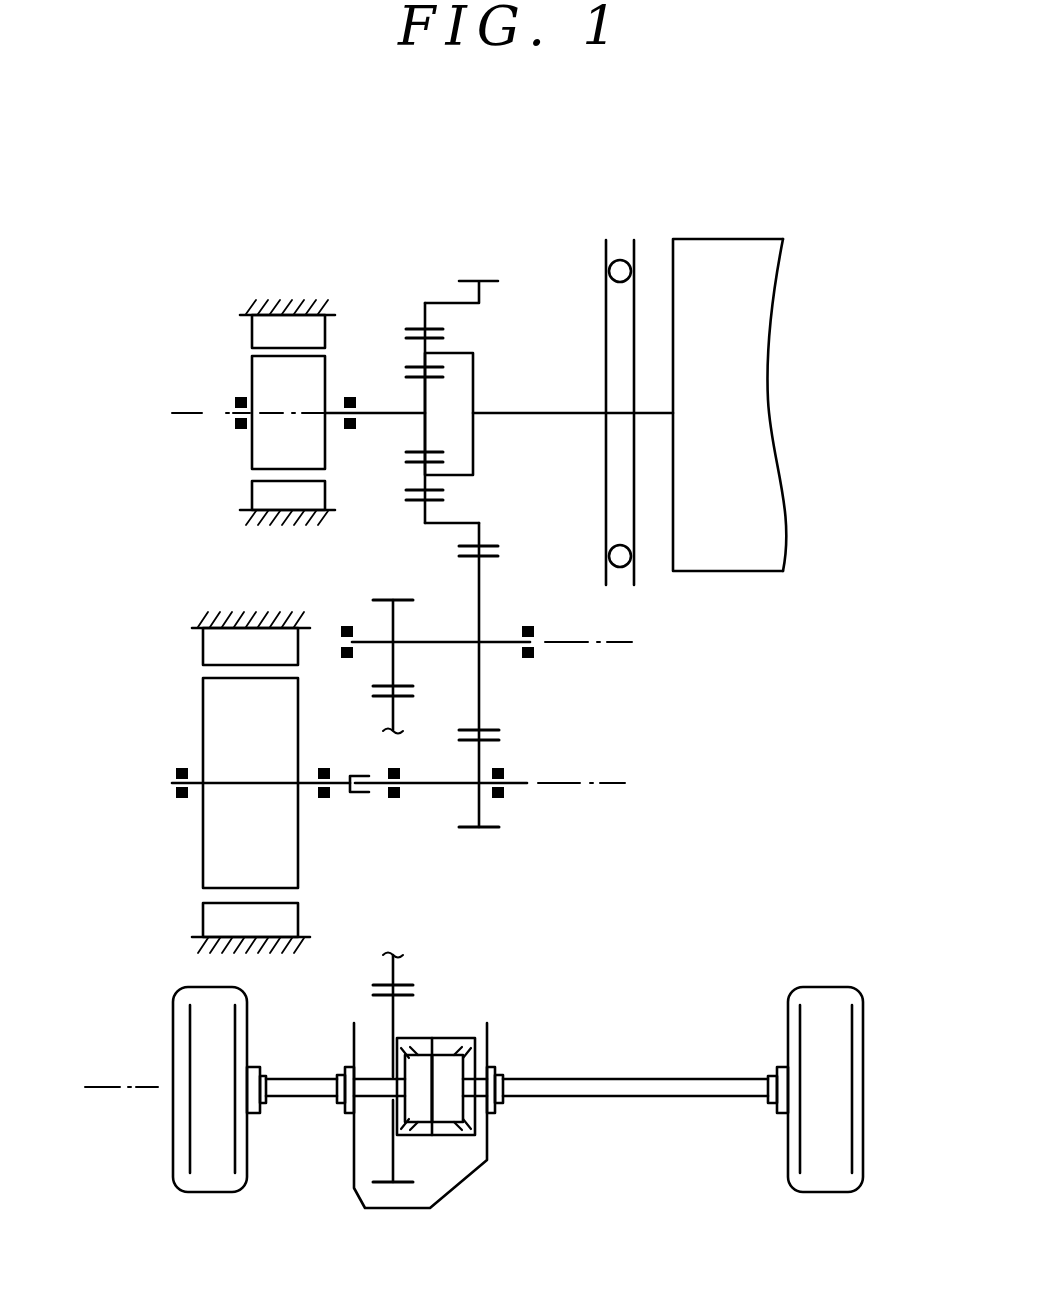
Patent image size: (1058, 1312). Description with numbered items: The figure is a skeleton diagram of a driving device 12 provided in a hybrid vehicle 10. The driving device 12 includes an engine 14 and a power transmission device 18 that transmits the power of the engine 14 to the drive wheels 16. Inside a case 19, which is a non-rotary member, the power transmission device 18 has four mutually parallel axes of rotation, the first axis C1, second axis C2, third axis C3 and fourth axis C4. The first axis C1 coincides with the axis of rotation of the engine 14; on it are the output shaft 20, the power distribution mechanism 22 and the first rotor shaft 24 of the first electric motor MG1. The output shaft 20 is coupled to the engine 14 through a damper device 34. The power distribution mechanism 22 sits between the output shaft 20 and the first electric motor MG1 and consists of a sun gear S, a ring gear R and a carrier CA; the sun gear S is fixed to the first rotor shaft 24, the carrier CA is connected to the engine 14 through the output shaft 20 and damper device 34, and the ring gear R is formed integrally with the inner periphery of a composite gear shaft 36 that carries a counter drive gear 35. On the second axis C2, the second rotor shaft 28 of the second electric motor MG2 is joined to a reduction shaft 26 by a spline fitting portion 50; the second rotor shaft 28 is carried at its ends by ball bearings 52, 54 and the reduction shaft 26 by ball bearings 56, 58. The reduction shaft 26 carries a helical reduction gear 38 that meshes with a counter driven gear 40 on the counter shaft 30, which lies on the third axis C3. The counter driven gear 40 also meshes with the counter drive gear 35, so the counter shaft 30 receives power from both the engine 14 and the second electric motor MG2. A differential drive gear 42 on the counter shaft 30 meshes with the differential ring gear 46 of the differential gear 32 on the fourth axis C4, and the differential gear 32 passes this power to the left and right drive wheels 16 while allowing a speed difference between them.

The hybrid vehicle 10 is at (378, 168).
The driving device 12 is at (842, 210).
The engine 14 is at (740, 247).
The drive wheels 16 is at (200, 998).
The power transmission device 18 is at (277, 205).
The case 19 is at (278, 303).
The output shaft 20 is at (512, 413).
The power distribution mechanism 22 is at (439, 368).
The first rotor shaft 24 is at (335, 420).
The reduction shaft 26 is at (506, 790).
The second rotor shaft 28 is at (310, 787).
The counter shaft 30 is at (500, 650).
The differential gear 32 is at (448, 1158).
The damper device 34 is at (625, 215).
The counter drive gear 35 is at (492, 548).
The composite gear shaft 36 is at (440, 533).
The reduction gear 38 is at (462, 830).
The counter driven gear 40 is at (490, 560).
The differential drive gear 42 is at (385, 686).
The differential ring gear 46 is at (388, 700).
The spline fitting portion 50 is at (360, 798).
The ball bearing 52 is at (178, 800).
The ball bearing 54 is at (323, 766).
The ball bearing 56 is at (397, 766).
The ball bearing 58 is at (498, 768).
The ring gear R is at (415, 322).
The sun gear S is at (413, 378).
The carrier CA is at (455, 353).
The first electric motor MG1 is at (250, 611).
The second electric motor MG2 is at (183, 710).
The first axis C1 is at (203, 413).
The second axis C2 is at (615, 785).
The third axis C3 is at (620, 642).
The fourth axis C4 is at (95, 1085).